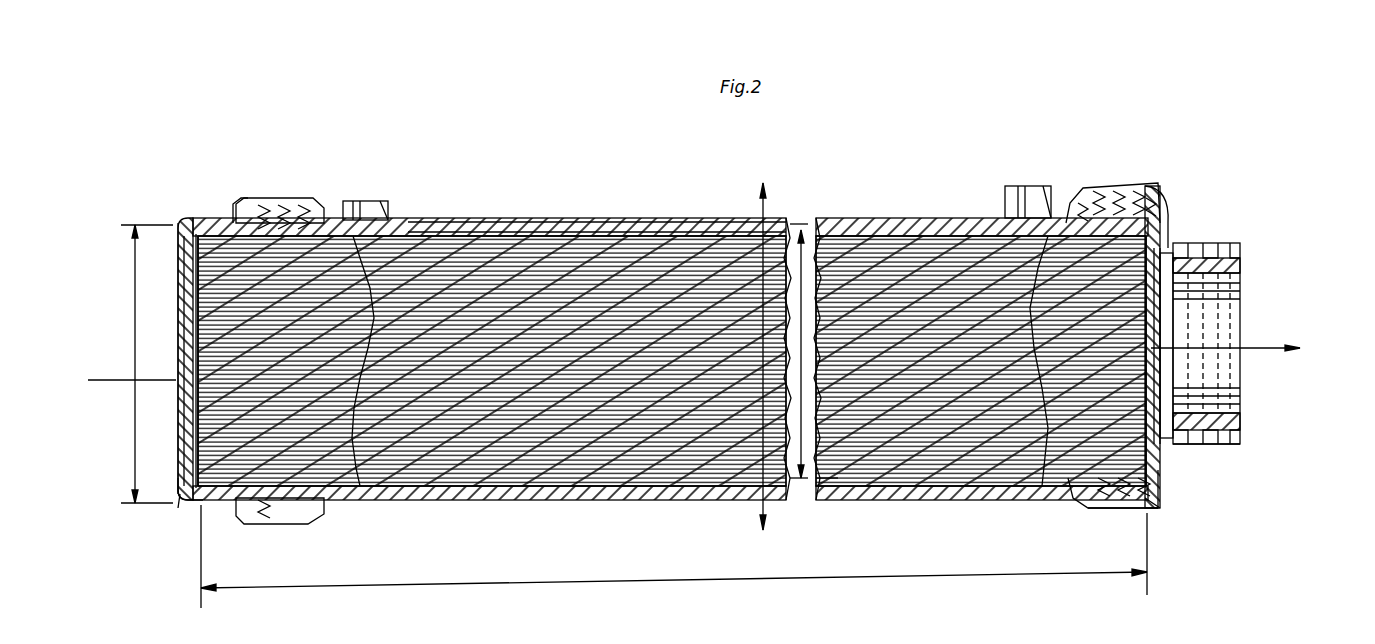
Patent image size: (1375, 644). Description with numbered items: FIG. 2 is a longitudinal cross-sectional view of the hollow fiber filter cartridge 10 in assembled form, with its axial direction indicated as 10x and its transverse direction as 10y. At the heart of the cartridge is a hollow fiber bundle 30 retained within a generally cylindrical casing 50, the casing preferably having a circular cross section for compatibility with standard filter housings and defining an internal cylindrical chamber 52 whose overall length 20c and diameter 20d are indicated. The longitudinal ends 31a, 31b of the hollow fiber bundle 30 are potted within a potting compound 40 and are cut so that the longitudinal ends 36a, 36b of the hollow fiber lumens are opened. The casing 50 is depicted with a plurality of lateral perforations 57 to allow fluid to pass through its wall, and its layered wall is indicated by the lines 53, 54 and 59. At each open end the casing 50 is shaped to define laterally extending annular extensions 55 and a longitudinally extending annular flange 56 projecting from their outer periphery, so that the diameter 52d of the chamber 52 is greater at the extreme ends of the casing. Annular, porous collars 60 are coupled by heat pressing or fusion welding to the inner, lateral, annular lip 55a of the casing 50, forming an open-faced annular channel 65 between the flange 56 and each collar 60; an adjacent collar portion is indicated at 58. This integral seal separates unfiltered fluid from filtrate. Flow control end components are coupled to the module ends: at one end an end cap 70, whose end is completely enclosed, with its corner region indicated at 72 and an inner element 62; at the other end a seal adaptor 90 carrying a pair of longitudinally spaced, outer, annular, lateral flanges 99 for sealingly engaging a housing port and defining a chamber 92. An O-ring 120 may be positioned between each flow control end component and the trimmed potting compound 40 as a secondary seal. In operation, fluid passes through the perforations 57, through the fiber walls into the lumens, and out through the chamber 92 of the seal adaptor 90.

The hollow fiber filter cartridge 10 is at (205, 140).
The axial direction 10x is at (1246, 348).
The radial direction 10y is at (778, 343).
The length of filter body 20c is at (700, 573).
The diameter of filter body 20d is at (127, 330).
The hollow fiber bundle 30 is at (650, 228).
The longitudinal end of the hollow fiber bundle 31a is at (178, 260).
The longitudinal end of the hollow fiber bundle 31b is at (1160, 445).
The longitudinal end of the hollow fiber lumens 36a is at (178, 492).
The longitudinal end of the hollow fiber lumens 36b is at (1156, 200).
The potting compound 40 is at (188, 275).
The casing 50 is at (700, 210).
The internal cylindrical chamber 52 is at (870, 228).
The diameter of the chamber 52d is at (810, 470).
The outer shell layer 53 is at (508, 214).
The outer shell inner layer 54 is at (565, 224).
The annular extensions 55 is at (1068, 195).
The annular lip 55a is at (300, 197).
The annular flange 56 is at (288, 197).
The lateral perforations 57 is at (360, 193).
The support collar 58 is at (1015, 178).
The second shell section 59 is at (830, 210).
The annular porous collars 60 is at (292, 190).
The end plate 62 is at (185, 360).
The open-faced annular channel 65 is at (1145, 190).
The end cap 70 is at (170, 400).
The end cap bottom corner 72 is at (193, 497).
The seal adaptor 90 is at (1232, 385).
The chamber 92 is at (1152, 470).
The annular lateral flanges 99 is at (1200, 436).
The O-ring 120 is at (226, 200).